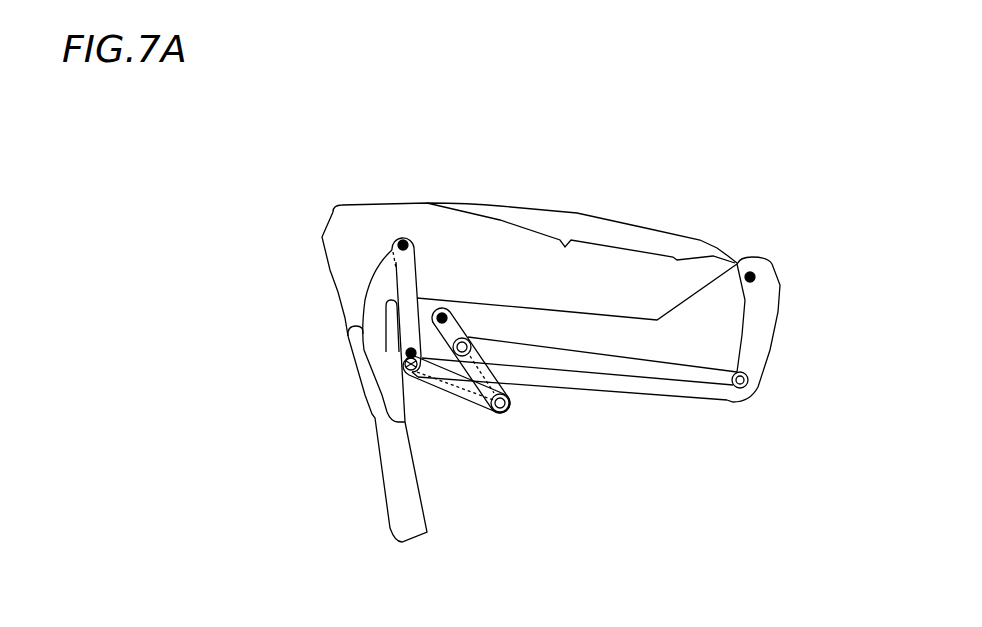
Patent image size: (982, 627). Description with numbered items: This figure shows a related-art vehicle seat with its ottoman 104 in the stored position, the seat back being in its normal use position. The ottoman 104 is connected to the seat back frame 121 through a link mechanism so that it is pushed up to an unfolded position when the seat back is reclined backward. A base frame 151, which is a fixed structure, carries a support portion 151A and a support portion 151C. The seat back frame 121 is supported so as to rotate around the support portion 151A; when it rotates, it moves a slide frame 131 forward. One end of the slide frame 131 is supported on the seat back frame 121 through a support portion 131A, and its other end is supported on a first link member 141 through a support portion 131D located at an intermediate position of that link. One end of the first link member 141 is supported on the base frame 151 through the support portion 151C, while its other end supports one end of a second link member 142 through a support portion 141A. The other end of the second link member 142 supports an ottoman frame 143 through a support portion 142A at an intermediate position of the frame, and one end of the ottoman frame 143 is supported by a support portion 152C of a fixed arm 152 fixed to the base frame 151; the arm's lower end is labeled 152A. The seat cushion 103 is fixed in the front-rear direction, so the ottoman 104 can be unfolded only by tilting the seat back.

The seat cushion 103 is at (633, 282).
The ottoman 104 is at (404, 490).
The seat back frame 121 is at (752, 333).
The slide frame 131 is at (573, 358).
The support portion 131A is at (740, 388).
The support portion 131D is at (471, 342).
The first link member 141 is at (485, 373).
The support portion 141A is at (504, 408).
The second link member 142 is at (460, 390).
The support portion 142A is at (420, 377).
The ottoman frame 143 is at (381, 362).
The base frame 151 is at (646, 388).
The support portion 151A is at (756, 277).
The support portion 151C is at (443, 313).
The fixed arm 152 is at (405, 287).
The upper link lower pivot 152A is at (412, 347).
The support portion 152C is at (402, 240).